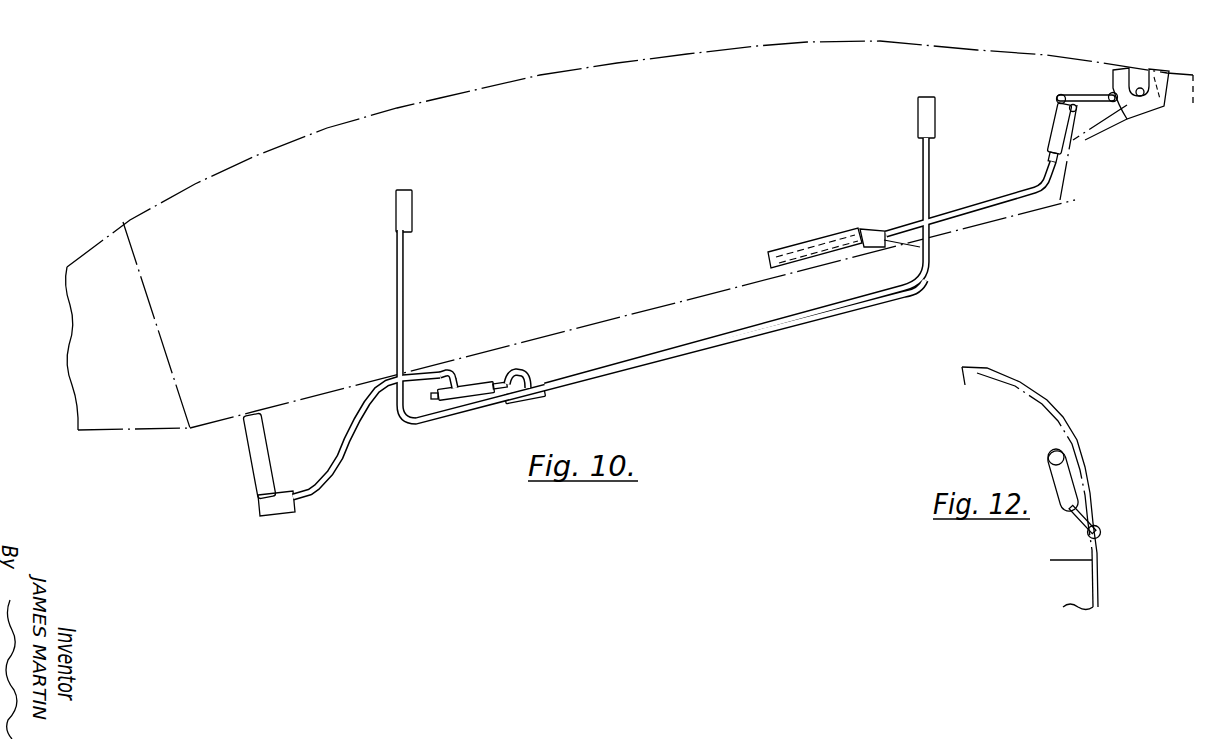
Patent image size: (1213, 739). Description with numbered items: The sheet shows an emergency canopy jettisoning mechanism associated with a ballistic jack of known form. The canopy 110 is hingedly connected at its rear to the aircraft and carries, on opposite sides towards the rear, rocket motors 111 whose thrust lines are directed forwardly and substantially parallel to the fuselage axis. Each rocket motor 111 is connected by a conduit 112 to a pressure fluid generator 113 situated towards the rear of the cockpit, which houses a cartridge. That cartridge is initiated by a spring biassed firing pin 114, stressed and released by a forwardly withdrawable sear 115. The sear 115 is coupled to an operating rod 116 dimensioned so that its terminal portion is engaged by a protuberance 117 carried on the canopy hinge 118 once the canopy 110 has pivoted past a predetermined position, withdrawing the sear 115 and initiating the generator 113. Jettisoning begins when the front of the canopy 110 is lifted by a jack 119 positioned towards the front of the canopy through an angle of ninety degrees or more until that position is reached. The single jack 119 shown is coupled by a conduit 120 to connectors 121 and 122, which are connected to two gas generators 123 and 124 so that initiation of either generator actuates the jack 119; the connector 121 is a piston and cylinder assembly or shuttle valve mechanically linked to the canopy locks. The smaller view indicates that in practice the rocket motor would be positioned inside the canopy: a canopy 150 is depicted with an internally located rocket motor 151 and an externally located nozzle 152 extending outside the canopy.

In FIG. 10, the canopy 110 is at (366, 106).
In FIG. 10, the rocket motor 111 is at (804, 244).
In FIG. 10, the conduit 112 is at (980, 204).
In FIG. 10, the pressure fluid generator 113 is at (1059, 128).
In FIG. 10, the spring biassed firing pin 114 is at (1072, 96).
In FIG. 10, the sear 115 is at (1078, 111).
In FIG. 10, the operating rod 116 is at (1095, 92).
In FIG. 10, the protuberance 117 is at (1130, 124).
In FIG. 10, the canopy hinge 118 is at (1148, 106).
In FIG. 10, the jack 119 is at (265, 453).
In FIG. 10, the conduit 120 is at (352, 437).
In FIG. 10, the connector 121 is at (473, 383).
In FIG. 10, the connector 122 is at (538, 383).
In FIG. 10, the gas generator 123 is at (413, 210).
In FIG. 10, the gas generator 124 is at (918, 113).
In FIG. 12, the canopy 150 is at (1067, 423).
In FIG. 12, the rocket motor 151 is at (1063, 483).
In FIG. 12, the nozzle 152 is at (1100, 528).